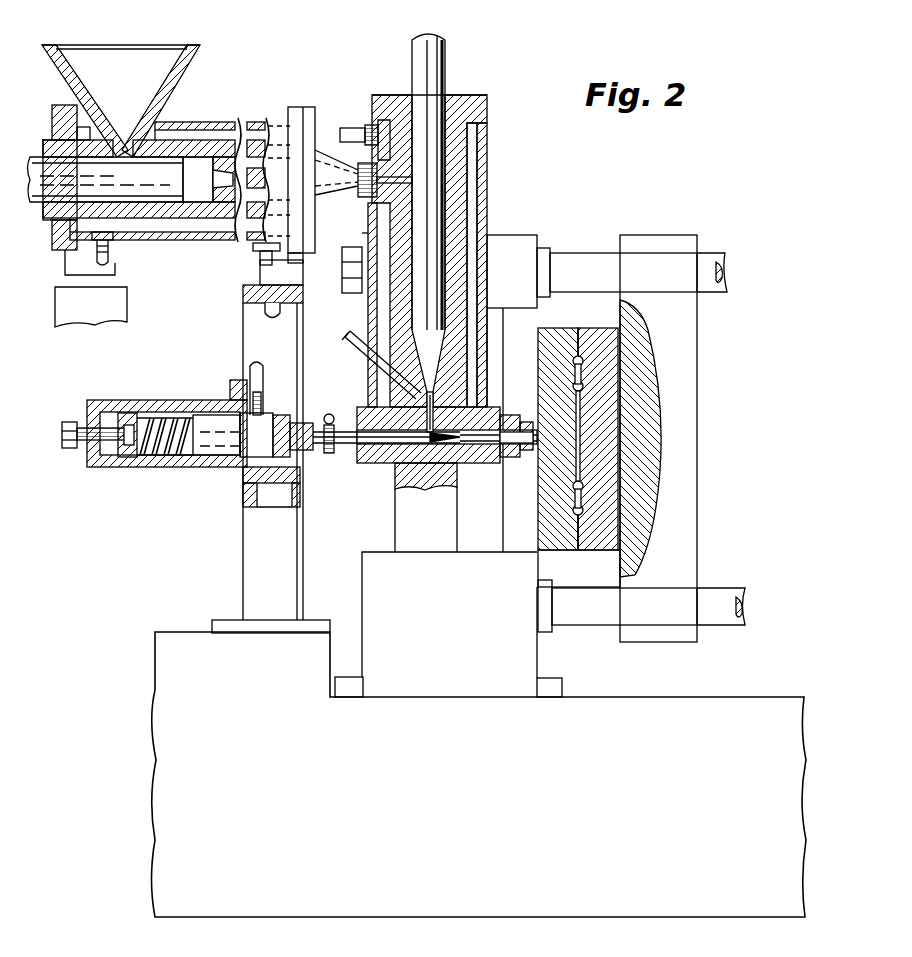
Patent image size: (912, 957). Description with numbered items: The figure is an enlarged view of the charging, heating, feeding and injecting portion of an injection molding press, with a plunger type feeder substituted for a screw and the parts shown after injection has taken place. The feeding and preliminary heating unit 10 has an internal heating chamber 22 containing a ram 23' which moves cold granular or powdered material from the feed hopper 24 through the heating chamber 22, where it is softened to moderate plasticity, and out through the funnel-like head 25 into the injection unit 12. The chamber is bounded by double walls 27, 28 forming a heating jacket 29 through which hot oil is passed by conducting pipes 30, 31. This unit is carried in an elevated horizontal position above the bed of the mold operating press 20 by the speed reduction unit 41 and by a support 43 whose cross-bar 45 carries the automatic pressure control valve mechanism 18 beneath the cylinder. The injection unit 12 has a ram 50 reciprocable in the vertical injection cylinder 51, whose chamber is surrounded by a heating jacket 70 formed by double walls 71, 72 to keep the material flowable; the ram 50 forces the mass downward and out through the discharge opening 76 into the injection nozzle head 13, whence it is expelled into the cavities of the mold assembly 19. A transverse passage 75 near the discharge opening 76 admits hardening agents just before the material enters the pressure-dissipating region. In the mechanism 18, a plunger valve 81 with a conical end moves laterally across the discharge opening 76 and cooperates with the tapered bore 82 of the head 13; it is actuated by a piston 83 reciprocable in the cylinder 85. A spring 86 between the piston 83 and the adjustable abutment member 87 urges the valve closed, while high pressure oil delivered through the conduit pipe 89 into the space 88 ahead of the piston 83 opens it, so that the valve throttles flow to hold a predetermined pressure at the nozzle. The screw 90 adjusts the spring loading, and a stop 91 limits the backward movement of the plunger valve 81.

The feeding and preliminary heating unit 10 is at (250, 120).
The injection unit 12 is at (449, 293).
The injection nozzle head 13 is at (482, 468).
The automatic pressure control valve mechanism 18 is at (175, 426).
The mold assembly 19 is at (576, 510).
The mold operating press 20 is at (700, 549).
The internal heating chamber 22 is at (207, 190).
The ram 23' is at (106, 229).
The feed hopper 24 is at (124, 62).
The funnel-like head 25 is at (326, 156).
The double wall 27 is at (192, 152).
The double wall 28 is at (197, 241).
The heating jacket 29 is at (220, 121).
The conducting pipe 30 is at (105, 253).
The conducting pipe 31 is at (268, 256).
The speed reduction unit 41 is at (78, 312).
The support 43 is at (262, 591).
The cross-bar 45 is at (272, 484).
The ram 50 is at (430, 64).
The vertical injection cylinder 51 is at (452, 139).
The heating jacket 70 is at (488, 216).
The double wall 71 is at (462, 169).
The double wall 72 is at (488, 101).
The transverse passage 75 is at (392, 371).
The discharge opening 76 is at (435, 425).
The plunger valve 81 is at (380, 436).
The tapered bore 82 is at (441, 445).
The piston 83 is at (219, 430).
The cylinder 85 is at (146, 466).
The spring 86 is at (167, 420).
The adjustable abutment member 87 is at (124, 420).
The space 88 is at (266, 420).
The conduit pipe 89 is at (258, 372).
The screw 90 is at (72, 449).
The stop 91 is at (330, 455).